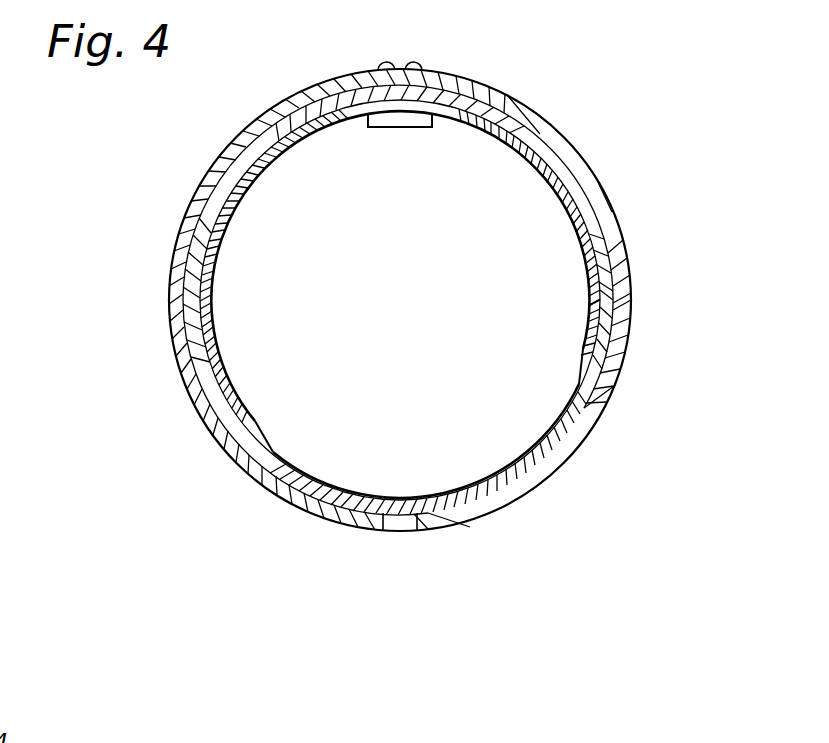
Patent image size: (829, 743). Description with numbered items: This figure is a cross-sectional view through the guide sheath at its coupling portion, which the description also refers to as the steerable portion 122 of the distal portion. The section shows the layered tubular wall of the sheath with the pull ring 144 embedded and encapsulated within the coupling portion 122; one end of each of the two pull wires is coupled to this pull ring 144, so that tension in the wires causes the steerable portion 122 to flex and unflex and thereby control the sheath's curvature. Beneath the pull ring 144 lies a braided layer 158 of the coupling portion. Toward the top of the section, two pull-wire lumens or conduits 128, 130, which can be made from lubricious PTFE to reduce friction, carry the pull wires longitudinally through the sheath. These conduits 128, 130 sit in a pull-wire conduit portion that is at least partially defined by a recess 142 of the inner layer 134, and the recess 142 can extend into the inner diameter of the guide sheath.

The steerable portion 122 is at (478, 80).
The pull-wire conduit 128 is at (385, 58).
The pull-wire conduit 130 is at (421, 58).
The inner layer 134 is at (592, 177).
The recess 142 is at (388, 130).
The pull ring 144 is at (528, 118).
The braided layer 158 is at (572, 150).